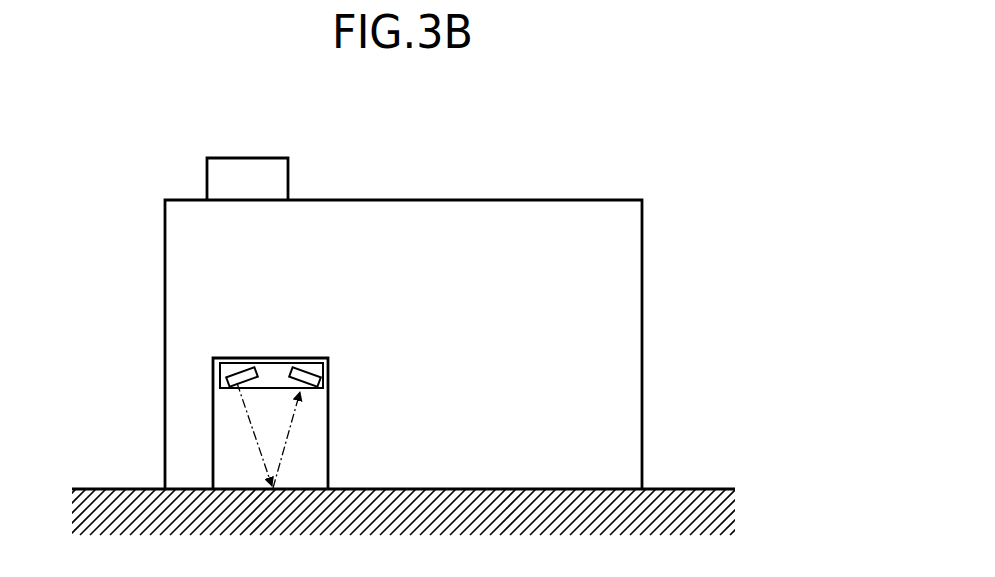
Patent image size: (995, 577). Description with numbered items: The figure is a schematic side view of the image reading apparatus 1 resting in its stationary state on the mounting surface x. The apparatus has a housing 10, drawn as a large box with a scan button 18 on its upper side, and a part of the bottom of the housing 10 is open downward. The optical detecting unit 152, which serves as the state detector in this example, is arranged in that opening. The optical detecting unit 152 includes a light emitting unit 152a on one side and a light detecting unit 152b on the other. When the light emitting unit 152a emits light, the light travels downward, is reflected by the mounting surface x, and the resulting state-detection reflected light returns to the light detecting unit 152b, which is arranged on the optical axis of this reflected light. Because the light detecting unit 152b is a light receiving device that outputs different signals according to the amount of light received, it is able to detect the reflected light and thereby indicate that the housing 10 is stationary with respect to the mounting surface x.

The image reading apparatus 1 is at (482, 150).
The housing 10 is at (606, 200).
The scan button 18 is at (266, 158).
The optical detecting unit 152 is at (270, 362).
The light emitting unit 152a is at (232, 370).
The light detecting unit 152b is at (313, 363).
The mounting surface x is at (702, 489).